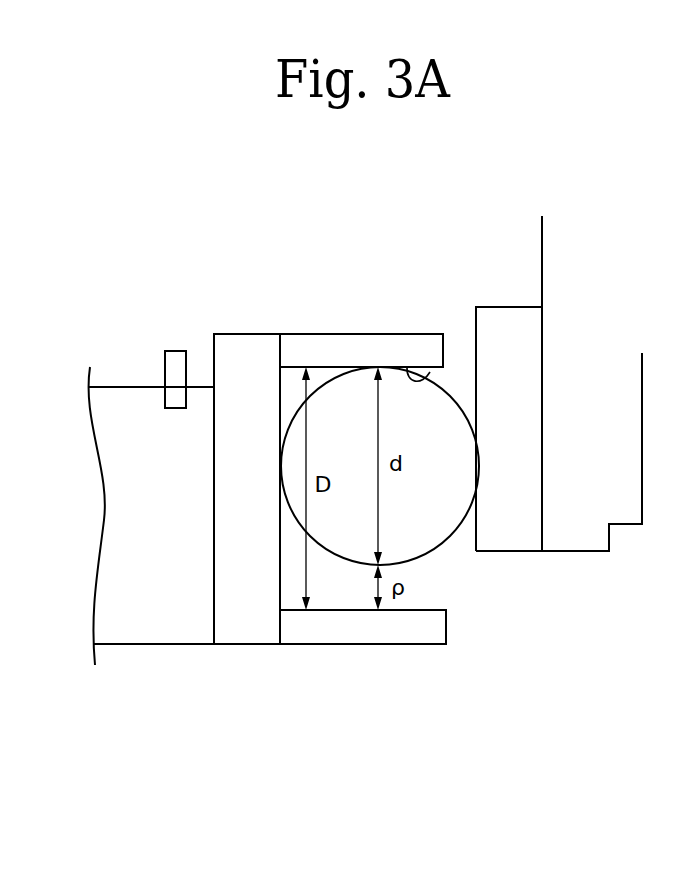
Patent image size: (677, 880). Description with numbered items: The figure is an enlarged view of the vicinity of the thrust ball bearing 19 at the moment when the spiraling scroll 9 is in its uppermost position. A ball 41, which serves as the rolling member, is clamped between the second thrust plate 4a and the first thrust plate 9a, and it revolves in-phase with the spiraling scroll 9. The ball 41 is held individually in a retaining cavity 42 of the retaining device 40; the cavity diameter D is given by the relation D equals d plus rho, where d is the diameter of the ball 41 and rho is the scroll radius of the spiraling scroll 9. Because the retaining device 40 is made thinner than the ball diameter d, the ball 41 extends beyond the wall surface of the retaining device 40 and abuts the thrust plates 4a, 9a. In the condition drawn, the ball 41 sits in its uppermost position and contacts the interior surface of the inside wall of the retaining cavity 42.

The thrust ball bearing 19 is at (268, 717).
The second thrust plate 4a is at (249, 632).
The ball 41 is at (345, 385).
The retaining cavity 42 is at (430, 372).
The retaining device 40 is at (347, 636).
The spiraling scroll 9 is at (602, 304).
The first thrust plate 9a is at (503, 551).